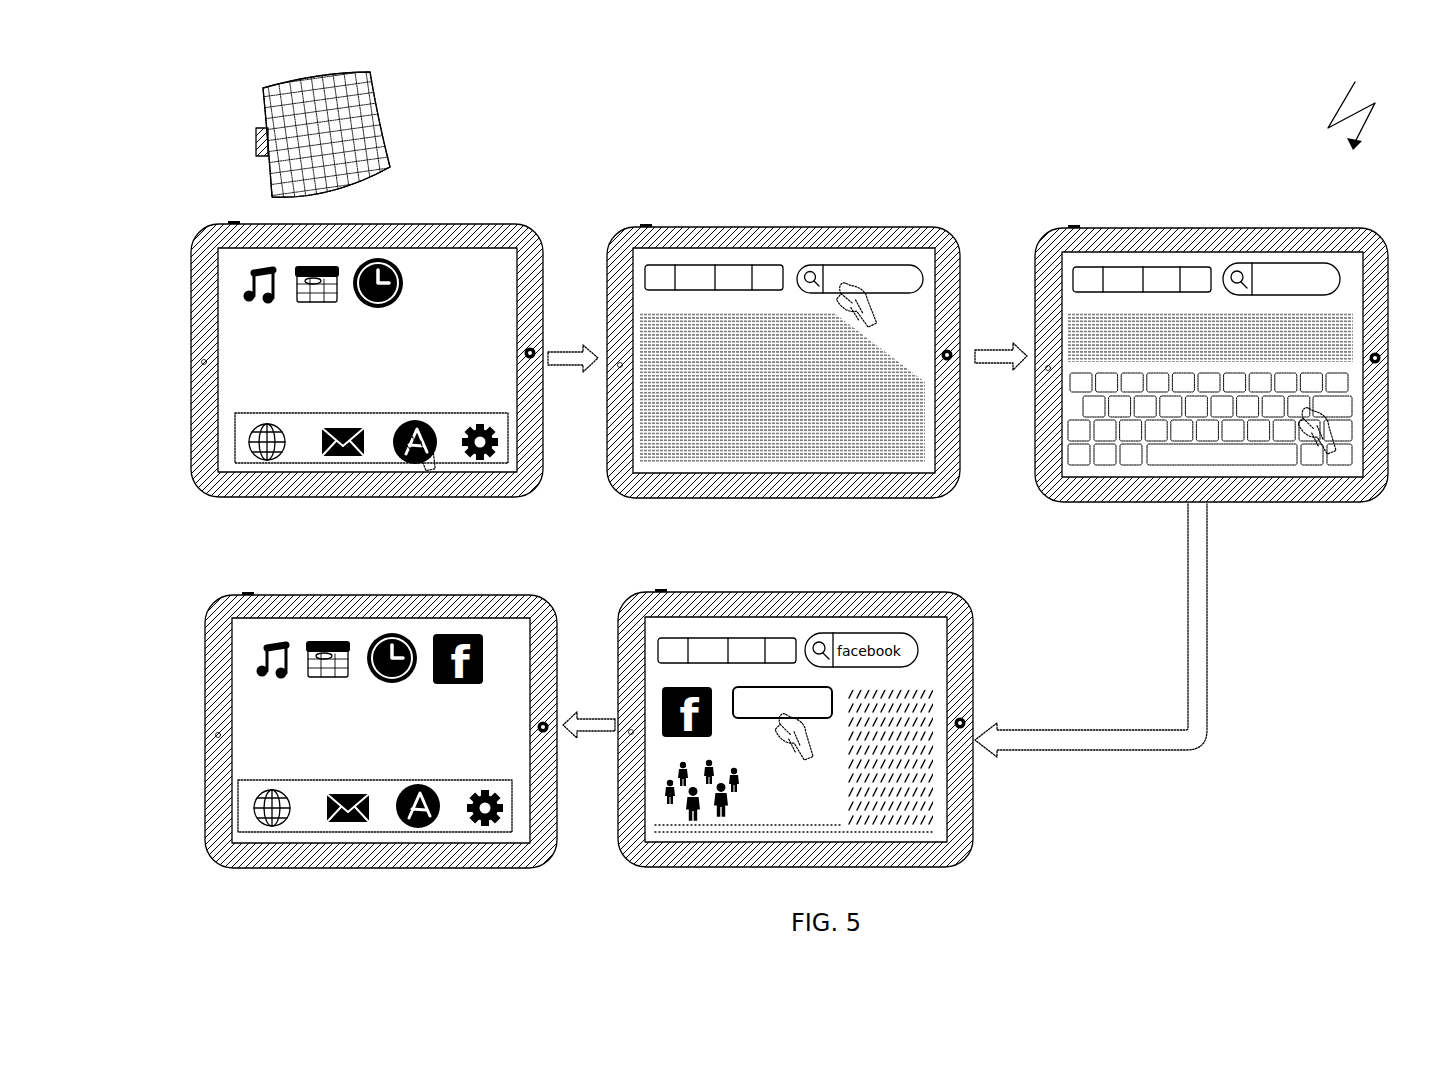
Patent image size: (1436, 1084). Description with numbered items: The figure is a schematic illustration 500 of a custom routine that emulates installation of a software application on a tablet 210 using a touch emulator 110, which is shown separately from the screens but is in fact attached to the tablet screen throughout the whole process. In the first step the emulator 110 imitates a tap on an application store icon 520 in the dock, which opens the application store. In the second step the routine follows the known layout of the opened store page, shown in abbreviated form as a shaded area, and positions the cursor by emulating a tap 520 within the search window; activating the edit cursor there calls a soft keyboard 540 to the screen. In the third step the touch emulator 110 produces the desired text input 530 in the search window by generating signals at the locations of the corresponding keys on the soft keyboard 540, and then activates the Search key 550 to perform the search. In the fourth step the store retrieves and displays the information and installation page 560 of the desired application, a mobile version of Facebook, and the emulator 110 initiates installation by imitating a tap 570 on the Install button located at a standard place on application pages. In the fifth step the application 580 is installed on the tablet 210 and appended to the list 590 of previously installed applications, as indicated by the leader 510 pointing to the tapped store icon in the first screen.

The touch emulator 110 is at (255, 125).
The tablet 210 is at (463, 221).
The schematic illustration 500 is at (1353, 103).
The app store icon selection 510 is at (437, 455).
The application store icon / emulated tap in search window 520 is at (867, 273).
The text input 530 is at (1252, 264).
The soft keyboard 540 is at (1200, 442).
The Search key 550 is at (1337, 412).
The information and installation page 560 is at (658, 743).
The tap on Install button 570 is at (832, 712).
The application 580 is at (487, 650).
The list of previously installed software applications 590 is at (368, 634).